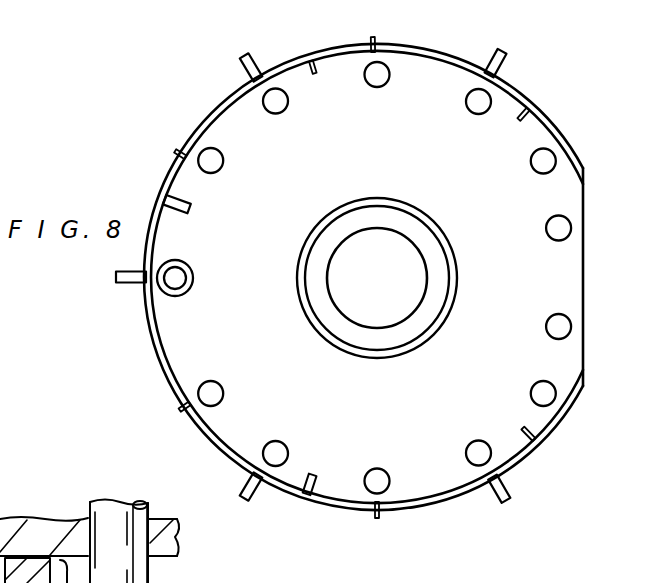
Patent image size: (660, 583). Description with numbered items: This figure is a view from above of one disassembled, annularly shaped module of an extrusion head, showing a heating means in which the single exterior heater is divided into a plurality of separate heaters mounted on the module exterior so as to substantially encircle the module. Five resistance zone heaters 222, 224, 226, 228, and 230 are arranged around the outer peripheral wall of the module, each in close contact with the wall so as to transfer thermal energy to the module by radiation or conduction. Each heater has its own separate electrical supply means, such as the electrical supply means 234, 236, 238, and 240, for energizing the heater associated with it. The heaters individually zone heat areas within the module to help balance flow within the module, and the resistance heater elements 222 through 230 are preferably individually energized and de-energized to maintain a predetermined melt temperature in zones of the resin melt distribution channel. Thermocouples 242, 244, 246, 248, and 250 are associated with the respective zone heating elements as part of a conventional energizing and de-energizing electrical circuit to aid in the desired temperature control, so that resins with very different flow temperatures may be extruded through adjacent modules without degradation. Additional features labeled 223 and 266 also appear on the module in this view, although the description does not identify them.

The resistance zone heater 222 is at (430, 512).
The tab 223 is at (534, 508).
The resistance zone heater 224 is at (200, 430).
The resistance zone heater 226 is at (148, 318).
The resistance zone heater 228 is at (210, 117).
The resistance zone heater 230 is at (430, 48).
The electrical supply means 234 is at (252, 490).
The electrical supply means 236 is at (116, 277).
The electrical supply means 238 is at (252, 56).
The electrical supply means 240 is at (494, 62).
The thermocouple 242 is at (523, 430).
The thermocouple 244 is at (318, 473).
The thermocouple 246 is at (186, 207).
The thermocouple 248 is at (316, 74).
The thermocouple 250 is at (518, 118).
The shaft 266 is at (43, 580).